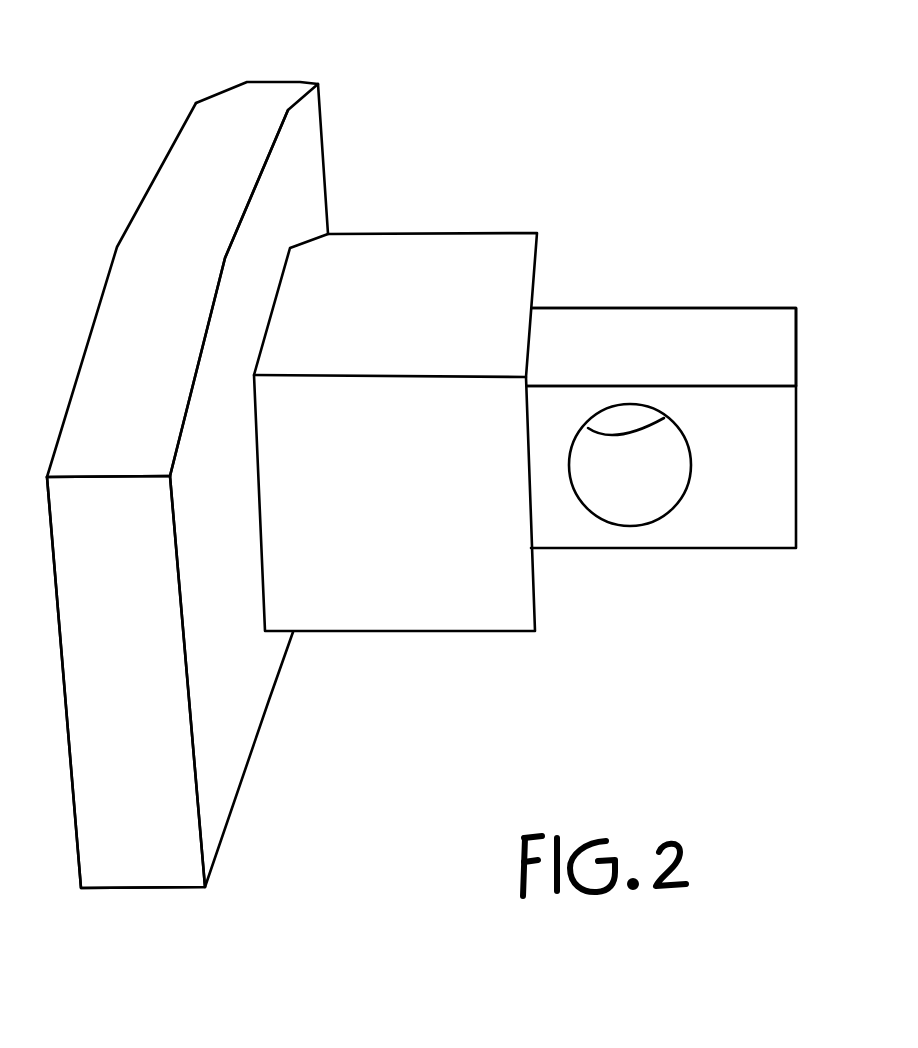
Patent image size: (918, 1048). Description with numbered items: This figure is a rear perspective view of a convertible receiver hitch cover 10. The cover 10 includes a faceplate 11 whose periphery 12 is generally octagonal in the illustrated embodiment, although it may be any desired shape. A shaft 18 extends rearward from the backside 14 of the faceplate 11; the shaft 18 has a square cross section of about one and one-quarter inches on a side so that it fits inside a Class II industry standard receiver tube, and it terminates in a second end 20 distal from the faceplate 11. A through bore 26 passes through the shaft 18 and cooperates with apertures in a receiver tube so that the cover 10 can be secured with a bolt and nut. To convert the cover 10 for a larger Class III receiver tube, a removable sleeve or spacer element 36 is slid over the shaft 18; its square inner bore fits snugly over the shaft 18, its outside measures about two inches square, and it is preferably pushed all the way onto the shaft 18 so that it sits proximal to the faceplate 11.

The convertible receiver hitch cover 10 is at (485, 109).
The faceplate 11 is at (290, 168).
The periphery 12 is at (248, 103).
The backside 14 is at (222, 548).
The shaft 18 is at (574, 331).
The second end 20 is at (740, 322).
The through bore 26 is at (634, 492).
The removable sleeve or spacer element 36 is at (398, 593).